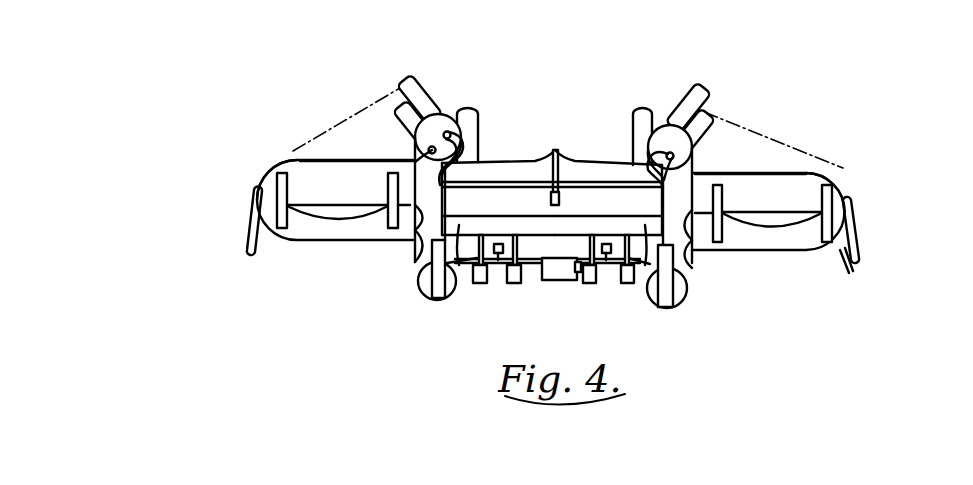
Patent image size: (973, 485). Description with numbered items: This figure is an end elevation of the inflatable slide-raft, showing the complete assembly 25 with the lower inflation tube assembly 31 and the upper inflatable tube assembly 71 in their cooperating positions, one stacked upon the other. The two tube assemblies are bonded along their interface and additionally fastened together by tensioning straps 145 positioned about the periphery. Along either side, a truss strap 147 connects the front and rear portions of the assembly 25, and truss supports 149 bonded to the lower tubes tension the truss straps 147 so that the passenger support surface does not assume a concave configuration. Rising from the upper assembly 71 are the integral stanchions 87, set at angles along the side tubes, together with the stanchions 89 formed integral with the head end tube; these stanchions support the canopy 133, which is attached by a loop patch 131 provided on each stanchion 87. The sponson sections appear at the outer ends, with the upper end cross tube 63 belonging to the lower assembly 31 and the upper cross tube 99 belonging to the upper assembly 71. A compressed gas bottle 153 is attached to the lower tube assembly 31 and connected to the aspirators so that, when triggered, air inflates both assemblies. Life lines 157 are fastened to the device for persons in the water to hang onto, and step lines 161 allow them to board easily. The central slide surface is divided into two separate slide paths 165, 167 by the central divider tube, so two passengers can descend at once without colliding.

The complete assembly 25 is at (350, 147).
The lower inflation tube assembly 31 is at (828, 262).
The upper end cross tube 63 is at (345, 233).
The upper inflatable tube assembly 71 is at (843, 173).
The stanchions 87 is at (423, 100).
The stanchions 89 is at (480, 116).
The upper cross tube 99 is at (303, 173).
The loop patch 131 is at (402, 78).
The canopy 133 is at (352, 112).
The tensioning straps 145 is at (274, 182).
The truss strap 147 is at (569, 230).
The truss supports 149 is at (423, 282).
The compressed gas bottle 153 is at (533, 272).
The life lines 157 is at (305, 215).
The step lines 161 is at (245, 240).
The slide path 165 is at (485, 172).
The slide path 167 is at (597, 175).